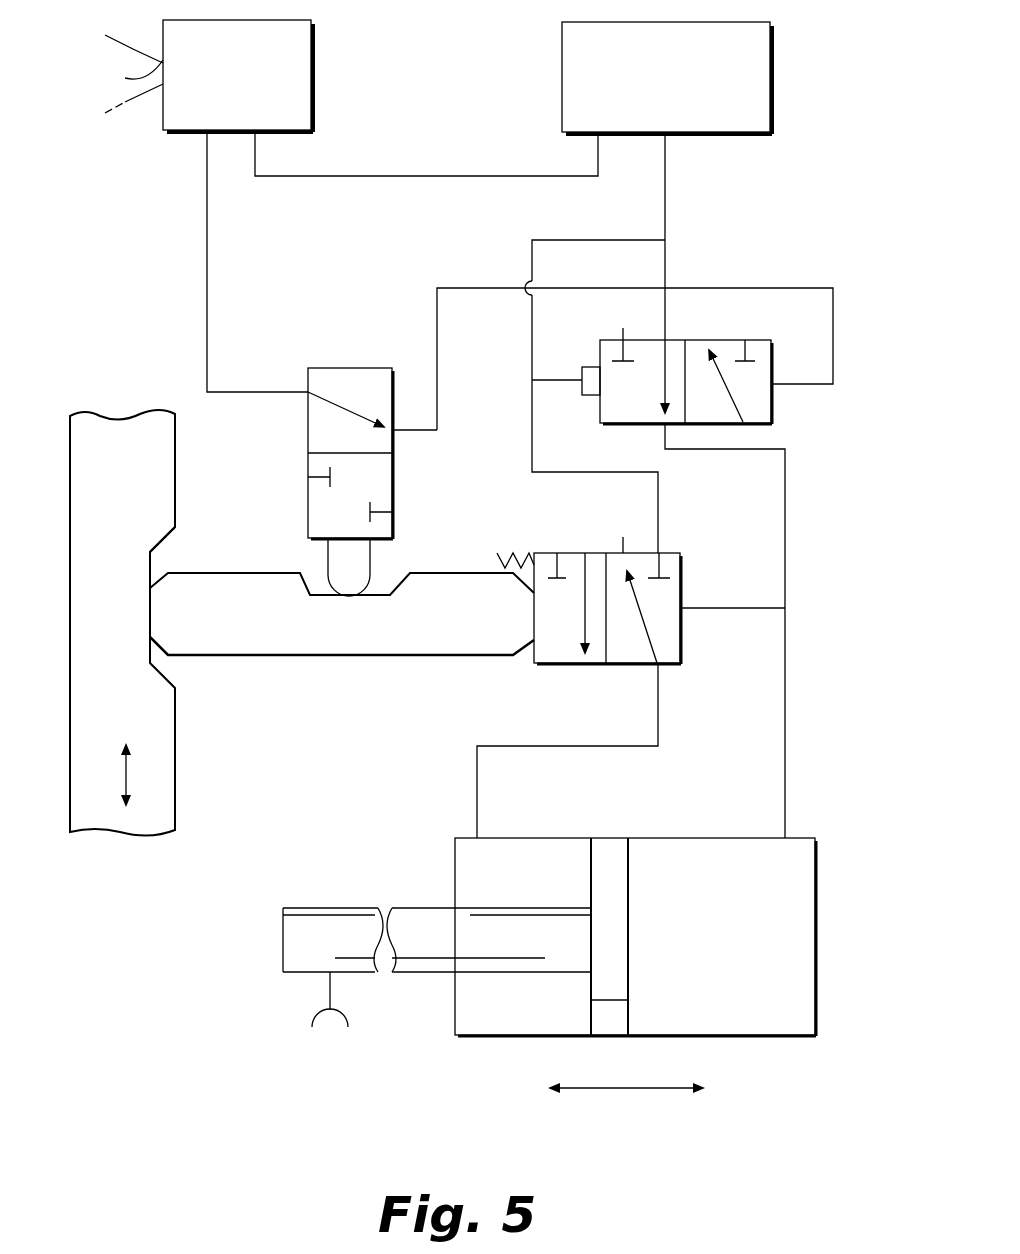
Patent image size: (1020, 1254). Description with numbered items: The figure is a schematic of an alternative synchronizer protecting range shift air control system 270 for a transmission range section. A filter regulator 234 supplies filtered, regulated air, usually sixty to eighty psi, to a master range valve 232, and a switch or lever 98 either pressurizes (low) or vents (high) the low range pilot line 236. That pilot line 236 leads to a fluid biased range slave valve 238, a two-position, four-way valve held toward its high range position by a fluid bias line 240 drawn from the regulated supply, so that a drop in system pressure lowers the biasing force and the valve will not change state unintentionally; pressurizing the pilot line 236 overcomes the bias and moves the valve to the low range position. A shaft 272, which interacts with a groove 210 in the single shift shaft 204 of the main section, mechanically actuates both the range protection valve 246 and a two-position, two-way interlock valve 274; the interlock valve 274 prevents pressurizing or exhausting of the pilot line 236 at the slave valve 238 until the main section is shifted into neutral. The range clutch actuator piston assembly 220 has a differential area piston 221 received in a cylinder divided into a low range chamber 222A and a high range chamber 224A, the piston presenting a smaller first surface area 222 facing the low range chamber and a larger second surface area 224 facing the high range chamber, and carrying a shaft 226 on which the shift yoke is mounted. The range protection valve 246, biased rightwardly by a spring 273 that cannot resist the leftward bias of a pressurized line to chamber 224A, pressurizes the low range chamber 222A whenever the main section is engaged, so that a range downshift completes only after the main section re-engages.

The switch or lever 98 is at (95, 77).
The master range valve 232 is at (313, 57).
The filter regulator 234 is at (772, 85).
The control system 270 is at (805, 194).
The low range pilot line 236 is at (207, 277).
The fluid biased range slave valve 238 is at (800, 416).
The fluid bias line 240 is at (562, 382).
The interlock valve 274 is at (410, 510).
The spring 273 is at (512, 548).
The single shift shaft 204 is at (175, 770).
The groove 210 is at (150, 562).
The shaft 272 is at (447, 648).
The range protection valve 246 is at (630, 672).
The range clutch actuator piston assembly 220 is at (840, 888).
The low range chamber 222A is at (509, 882).
The high range chamber 224A is at (759, 992).
The first surface area 222 is at (590, 993).
The second surface area 224 is at (594, 878).
The differential area piston 221 is at (620, 962).
The shaft 226 is at (422, 945).